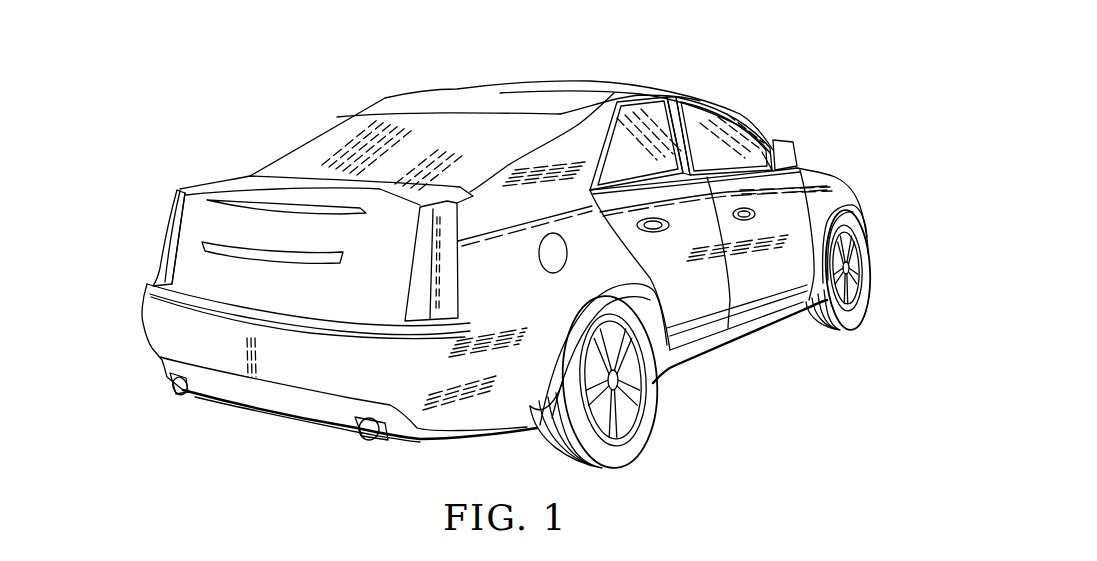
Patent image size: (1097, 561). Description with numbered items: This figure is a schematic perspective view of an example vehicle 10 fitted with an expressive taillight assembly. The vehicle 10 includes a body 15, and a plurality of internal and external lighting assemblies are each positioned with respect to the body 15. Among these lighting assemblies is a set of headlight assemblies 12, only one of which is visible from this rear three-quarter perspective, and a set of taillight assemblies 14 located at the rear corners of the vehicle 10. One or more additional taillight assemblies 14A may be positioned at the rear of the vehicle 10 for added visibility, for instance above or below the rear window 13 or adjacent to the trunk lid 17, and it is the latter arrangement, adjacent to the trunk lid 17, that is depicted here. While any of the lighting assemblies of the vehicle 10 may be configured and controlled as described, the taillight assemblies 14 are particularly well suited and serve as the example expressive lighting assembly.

The vehicle 10 is at (727, 67).
The headlight assembly 12 is at (855, 186).
The rear window 13 is at (425, 131).
The taillight assembly 14 is at (158, 238).
The additional taillight assembly 14A is at (267, 210).
The body 15 is at (513, 226).
The trunk lid 17 is at (322, 191).